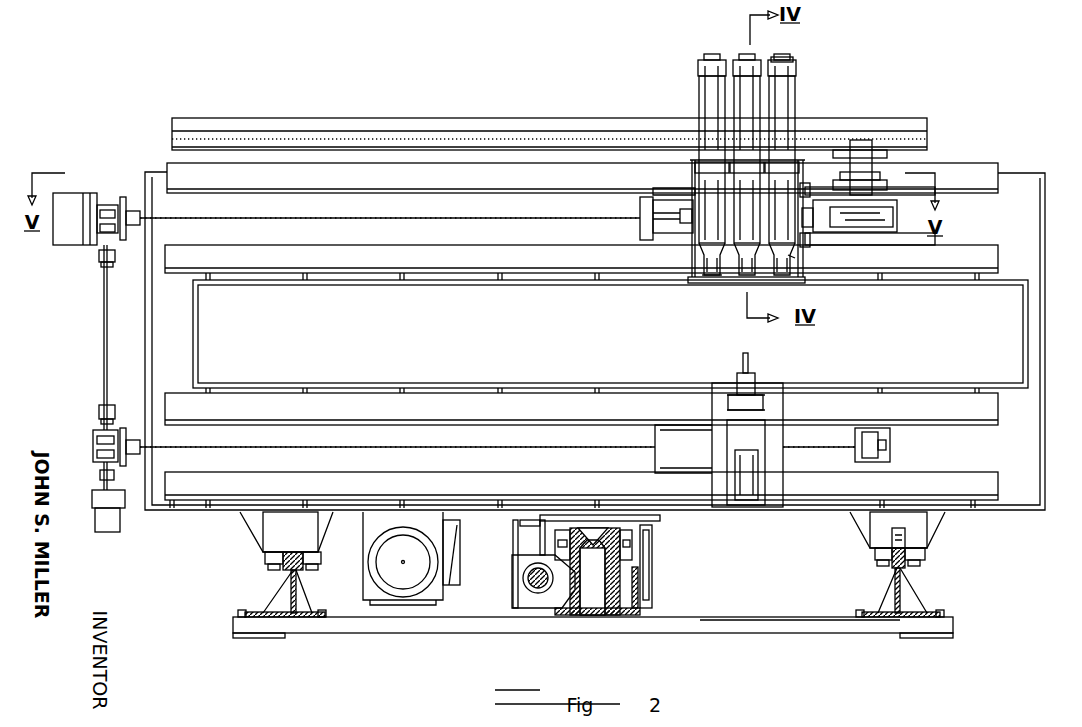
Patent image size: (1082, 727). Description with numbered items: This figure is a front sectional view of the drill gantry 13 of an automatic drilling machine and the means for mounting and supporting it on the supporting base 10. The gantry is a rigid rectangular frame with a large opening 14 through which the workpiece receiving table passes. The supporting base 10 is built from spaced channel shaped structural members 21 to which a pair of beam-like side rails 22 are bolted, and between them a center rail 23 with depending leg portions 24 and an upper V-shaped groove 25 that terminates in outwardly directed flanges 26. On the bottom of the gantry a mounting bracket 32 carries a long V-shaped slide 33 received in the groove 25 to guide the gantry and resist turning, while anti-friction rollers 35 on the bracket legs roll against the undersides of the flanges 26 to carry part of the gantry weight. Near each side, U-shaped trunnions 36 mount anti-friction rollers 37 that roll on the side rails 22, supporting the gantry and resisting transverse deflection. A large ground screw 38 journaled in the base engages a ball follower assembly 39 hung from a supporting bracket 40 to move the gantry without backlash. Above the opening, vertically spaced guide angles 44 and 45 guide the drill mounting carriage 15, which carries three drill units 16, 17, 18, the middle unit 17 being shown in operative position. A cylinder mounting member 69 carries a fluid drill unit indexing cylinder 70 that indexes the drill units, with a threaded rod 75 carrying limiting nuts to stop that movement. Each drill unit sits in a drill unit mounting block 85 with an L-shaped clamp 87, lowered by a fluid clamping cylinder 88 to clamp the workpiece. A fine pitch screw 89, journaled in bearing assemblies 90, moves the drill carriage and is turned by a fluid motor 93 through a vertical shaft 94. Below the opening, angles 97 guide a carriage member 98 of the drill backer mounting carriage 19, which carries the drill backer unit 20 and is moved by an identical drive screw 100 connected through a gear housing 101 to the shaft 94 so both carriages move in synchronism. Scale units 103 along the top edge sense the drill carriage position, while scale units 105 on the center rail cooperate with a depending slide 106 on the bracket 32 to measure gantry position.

The supporting base 10 is at (794, 627).
The drill gantry 13 is at (1032, 210).
The opening 14 is at (1018, 328).
The drill mounting carriage 15 is at (690, 153).
The drill unit 16 is at (711, 88).
The drill unit 17 is at (750, 88).
The drill unit 18 is at (788, 106).
The drill backer mounting carriage 19 is at (772, 392).
The drill backer unit 20 is at (752, 382).
The channel shaped structural members 21 is at (948, 623).
The side rails 22 is at (280, 588).
The center rail 23 is at (598, 617).
The depending leg portions 24 is at (612, 614).
The V-shaped groove 25 is at (645, 553).
The outwardly directed flanges 26 is at (650, 542).
The mounting bracket 32 is at (640, 518).
The V-shaped slide 33 is at (593, 548).
The anti-friction roller 35 is at (565, 548).
The trunnions 36 is at (275, 535).
The anti-friction roller 37 is at (905, 545).
The screw 38 is at (536, 593).
The ball follower assembly 39 is at (515, 595).
The supporting bracket 40 is at (505, 565).
The guide angle 44 is at (513, 178).
The guide angle 45 is at (433, 258).
The cylinder mounting member 69 is at (872, 226).
The fluid drill unit indexing cylinder 70 is at (873, 232).
The threaded rod 75 is at (663, 245).
The drill unit mounting block 85 is at (792, 258).
The L-shaped clamp 87 is at (710, 278).
The fluid clamping cylinder 88 is at (793, 62).
The fine pitch screw 89 is at (292, 225).
The bearing assemblies 90 is at (886, 445).
The fluid motor 93 is at (110, 532).
The vertical shaft 94 is at (104, 330).
The angles 97 is at (910, 405).
The carriage member 98 is at (712, 435).
The drive screw 100 is at (308, 443).
The gear housing 101 is at (98, 443).
The scale units 103 is at (284, 135).
The scale units 105 is at (660, 578).
The depending slide 106 is at (648, 592).